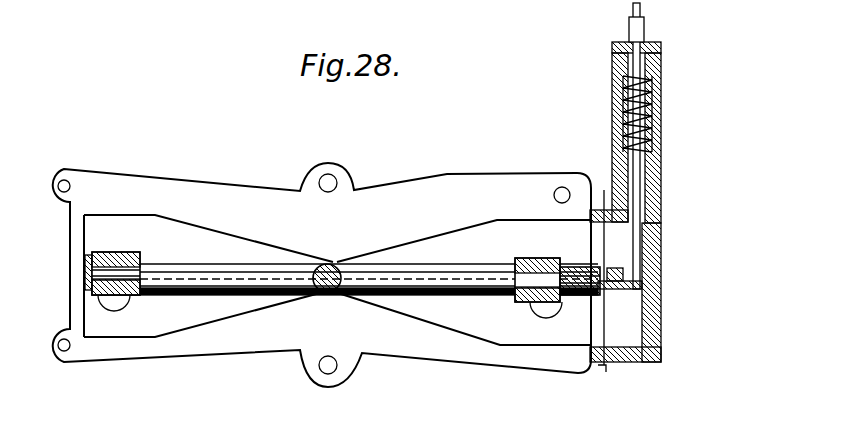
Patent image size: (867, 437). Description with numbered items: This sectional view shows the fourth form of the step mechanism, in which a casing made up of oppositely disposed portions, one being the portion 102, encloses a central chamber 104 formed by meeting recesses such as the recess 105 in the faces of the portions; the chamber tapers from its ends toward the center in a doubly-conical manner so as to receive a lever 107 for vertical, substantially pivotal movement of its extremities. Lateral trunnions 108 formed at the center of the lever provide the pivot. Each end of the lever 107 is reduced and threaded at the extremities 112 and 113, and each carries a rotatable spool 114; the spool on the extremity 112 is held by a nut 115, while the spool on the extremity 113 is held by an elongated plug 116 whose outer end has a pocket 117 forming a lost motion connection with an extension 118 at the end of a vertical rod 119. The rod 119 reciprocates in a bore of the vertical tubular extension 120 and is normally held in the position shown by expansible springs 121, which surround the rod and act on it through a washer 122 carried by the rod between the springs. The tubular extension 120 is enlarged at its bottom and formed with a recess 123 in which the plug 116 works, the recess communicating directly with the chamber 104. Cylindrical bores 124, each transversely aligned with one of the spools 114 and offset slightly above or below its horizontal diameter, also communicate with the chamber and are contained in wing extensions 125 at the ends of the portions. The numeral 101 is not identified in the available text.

The base plate 101 is at (273, 191).
The portion 102 is at (347, 208).
The central chamber 104 is at (337, 319).
The recess 105 is at (481, 224).
The lever 107 is at (203, 265).
The lateral trunnions 108 is at (333, 261).
The reduced threaded extremity 112 is at (110, 267).
The reduced threaded extremity 113 is at (542, 270).
The rotatable spool 114 is at (112, 293).
The nut 115 is at (88, 269).
The plug 116 is at (604, 345).
The pocket 117 is at (605, 197).
The extension 118 is at (640, 295).
The vertical rod 119 is at (637, 168).
The vertical tubular extension 120 is at (646, 68).
The expansible springs 121 is at (652, 128).
The washer 122 is at (622, 110).
The recess 123 is at (627, 335).
The cylindrical bores 124 is at (122, 300).
The wing extensions 125 is at (544, 304).